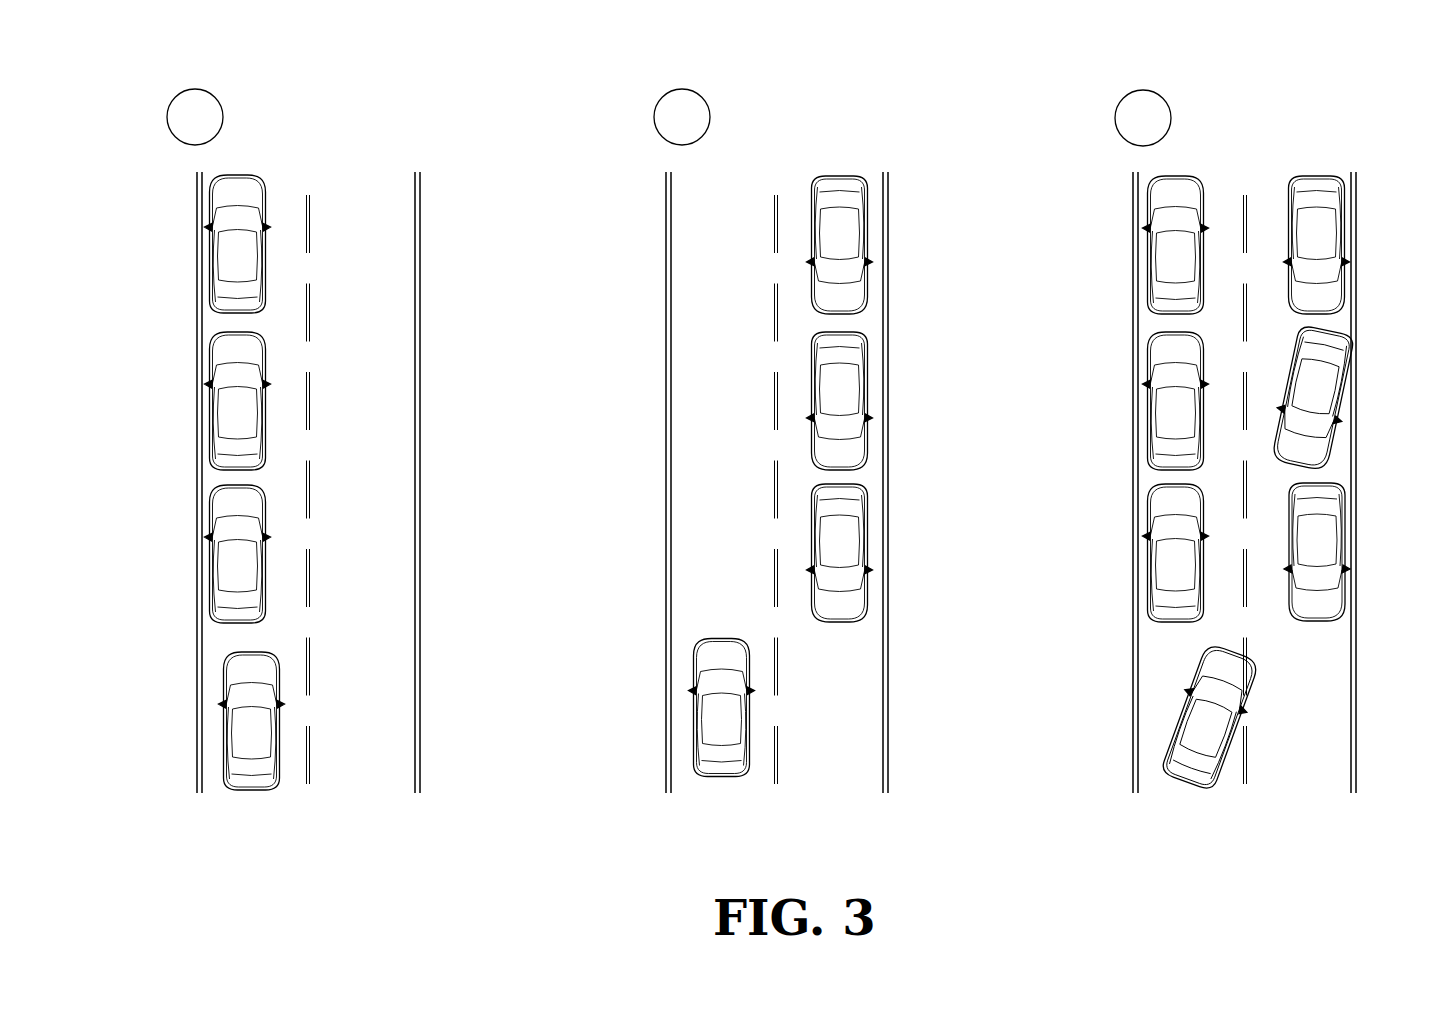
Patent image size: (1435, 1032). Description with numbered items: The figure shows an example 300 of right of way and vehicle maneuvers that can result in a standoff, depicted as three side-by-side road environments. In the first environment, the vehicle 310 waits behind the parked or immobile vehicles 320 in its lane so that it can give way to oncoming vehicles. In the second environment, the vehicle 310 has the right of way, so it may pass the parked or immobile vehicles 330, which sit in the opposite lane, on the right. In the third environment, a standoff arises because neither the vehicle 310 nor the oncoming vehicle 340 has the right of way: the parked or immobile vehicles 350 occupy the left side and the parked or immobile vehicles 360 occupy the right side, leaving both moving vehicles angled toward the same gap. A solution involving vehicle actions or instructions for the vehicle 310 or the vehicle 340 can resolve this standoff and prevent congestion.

The example 300 is at (997, 91).
The vehicle 310 is at (245, 727).
The parked or immobile vehicles 320 is at (174, 172).
The parked or immobile vehicles 330 is at (909, 172).
The vehicle 340 is at (1322, 380).
The parked or immobile vehicles 350 is at (1114, 172).
The parked or immobile vehicles 360 is at (1322, 231).